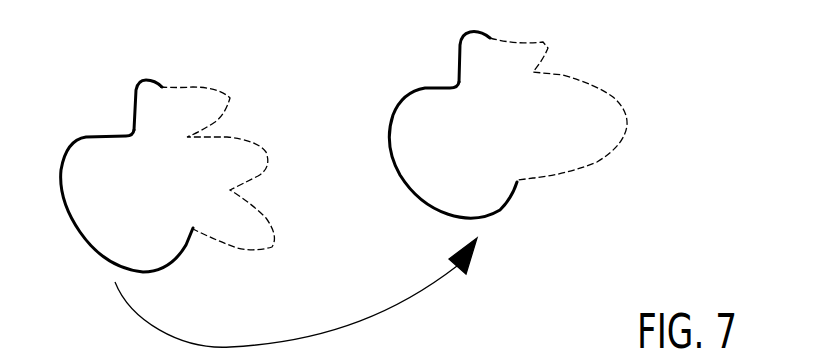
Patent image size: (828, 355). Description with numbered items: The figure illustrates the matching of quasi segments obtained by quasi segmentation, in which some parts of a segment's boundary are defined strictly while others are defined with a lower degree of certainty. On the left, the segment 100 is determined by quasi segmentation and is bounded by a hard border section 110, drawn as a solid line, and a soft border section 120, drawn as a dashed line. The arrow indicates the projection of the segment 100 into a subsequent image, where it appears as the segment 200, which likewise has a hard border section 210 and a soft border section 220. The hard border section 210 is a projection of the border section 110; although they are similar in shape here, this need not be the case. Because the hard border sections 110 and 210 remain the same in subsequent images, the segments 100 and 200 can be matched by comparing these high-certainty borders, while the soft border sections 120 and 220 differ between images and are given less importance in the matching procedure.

The segment 100 is at (172, 193).
The hard border section 110 is at (135, 90).
The soft border section 120 is at (228, 97).
The segment 200 is at (506, 140).
The hard border section 210 is at (457, 62).
The soft border section 220 is at (600, 87).